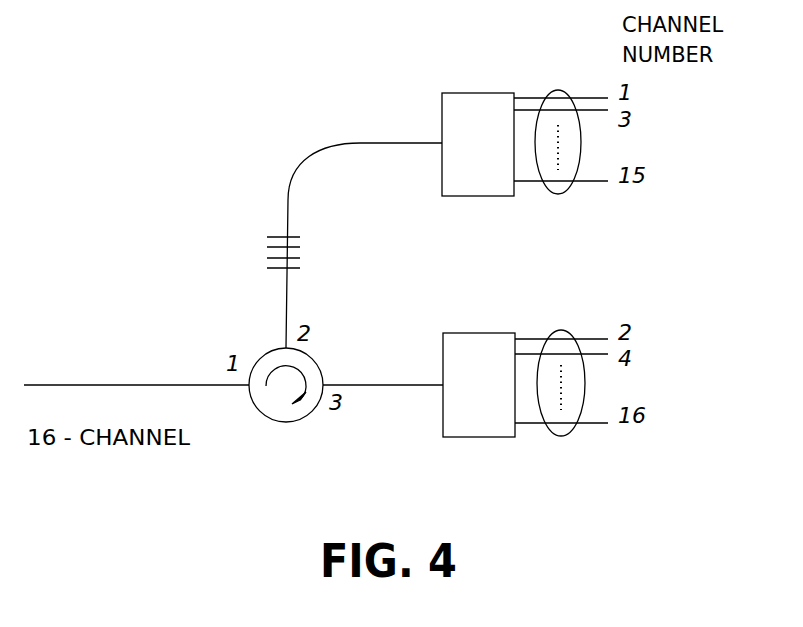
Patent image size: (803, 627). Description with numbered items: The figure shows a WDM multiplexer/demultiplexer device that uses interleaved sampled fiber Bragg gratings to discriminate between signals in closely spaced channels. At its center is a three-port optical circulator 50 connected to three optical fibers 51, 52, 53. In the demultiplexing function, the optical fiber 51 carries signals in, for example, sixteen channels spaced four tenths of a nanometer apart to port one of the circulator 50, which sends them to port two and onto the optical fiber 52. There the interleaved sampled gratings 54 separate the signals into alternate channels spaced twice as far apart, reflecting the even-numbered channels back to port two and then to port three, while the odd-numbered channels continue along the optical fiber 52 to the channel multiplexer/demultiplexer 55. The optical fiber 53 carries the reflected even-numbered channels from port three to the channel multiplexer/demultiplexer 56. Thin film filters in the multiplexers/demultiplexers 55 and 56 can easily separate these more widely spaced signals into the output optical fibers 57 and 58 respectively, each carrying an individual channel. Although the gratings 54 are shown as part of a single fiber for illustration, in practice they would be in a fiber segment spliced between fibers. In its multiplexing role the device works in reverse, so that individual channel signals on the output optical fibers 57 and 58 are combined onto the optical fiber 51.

The three-port optical circulator 50 is at (287, 422).
The optical fiber 51 is at (53, 385).
The optical fiber 52 is at (287, 307).
The optical fiber 53 is at (417, 388).
The interleaved sampled gratings 54 is at (300, 247).
The channel multiplexer/demultiplexer 55 is at (483, 185).
The channel multiplexer/demultiplexer 56 is at (483, 427).
The output optical fibers 57 is at (563, 90).
The output optical fibers 58 is at (565, 330).